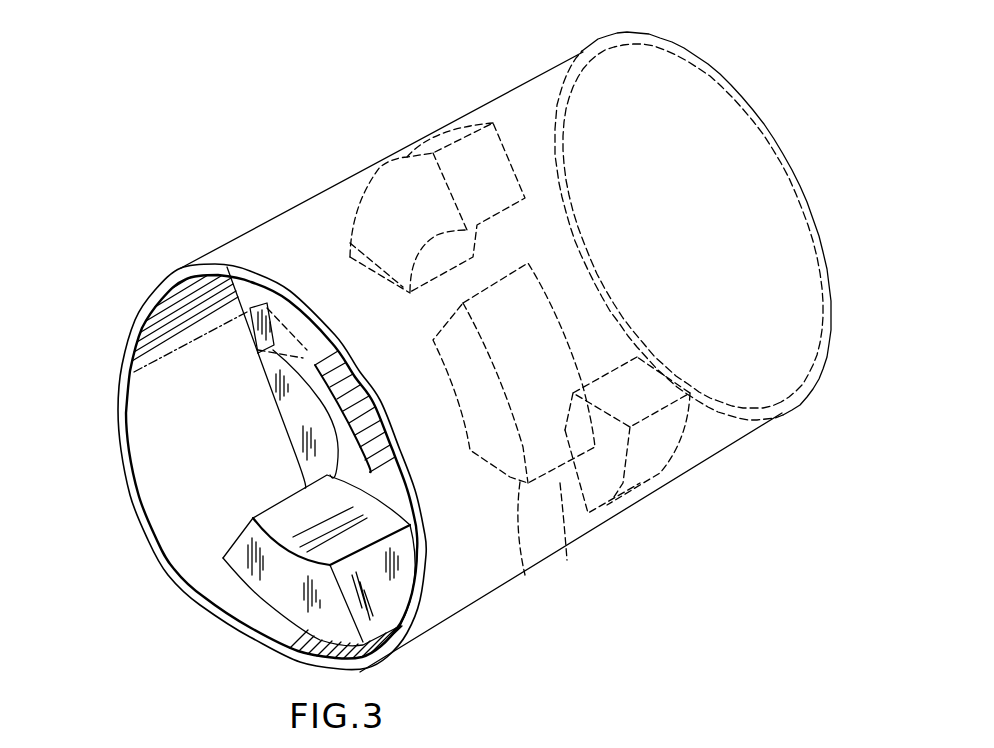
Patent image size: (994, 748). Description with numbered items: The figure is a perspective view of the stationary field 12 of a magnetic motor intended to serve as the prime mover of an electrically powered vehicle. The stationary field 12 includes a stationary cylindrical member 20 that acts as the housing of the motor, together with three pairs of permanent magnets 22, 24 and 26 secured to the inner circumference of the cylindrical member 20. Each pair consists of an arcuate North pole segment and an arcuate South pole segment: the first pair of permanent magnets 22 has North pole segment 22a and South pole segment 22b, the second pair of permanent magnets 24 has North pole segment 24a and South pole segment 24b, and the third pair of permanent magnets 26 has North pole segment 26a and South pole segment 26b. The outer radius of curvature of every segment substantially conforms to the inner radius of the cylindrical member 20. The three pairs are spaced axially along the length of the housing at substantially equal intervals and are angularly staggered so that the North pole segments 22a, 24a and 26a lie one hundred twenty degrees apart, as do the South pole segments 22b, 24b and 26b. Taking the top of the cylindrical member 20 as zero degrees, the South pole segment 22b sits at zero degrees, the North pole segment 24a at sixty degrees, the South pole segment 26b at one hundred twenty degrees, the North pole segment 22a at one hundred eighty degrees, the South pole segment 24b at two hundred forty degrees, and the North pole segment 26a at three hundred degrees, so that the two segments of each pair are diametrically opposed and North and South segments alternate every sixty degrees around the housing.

The stationary field 12 is at (458, 618).
The stationary cylindrical member 20 is at (127, 421).
The first pair of permanent magnets 22 is at (268, 360).
The North pole segment 22a is at (277, 600).
The South pole segment 22b is at (258, 353).
The second pair of permanent magnets 24 is at (560, 480).
The North pole segment 24a is at (524, 578).
The South pole segment 24b is at (284, 427).
The third pair of permanent magnets 26 is at (668, 485).
The North pole segment 26a is at (361, 195).
The South pole segment 26b is at (628, 495).